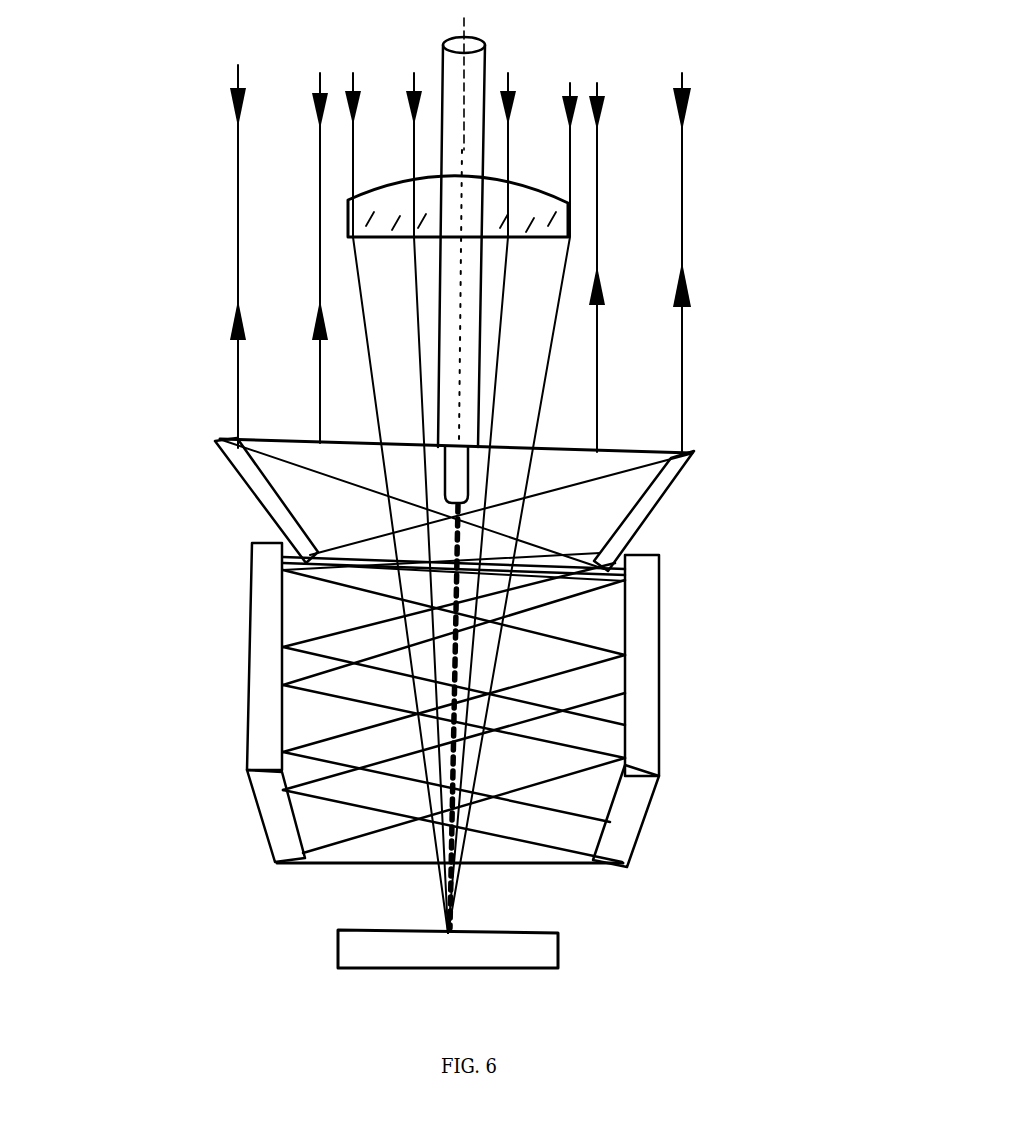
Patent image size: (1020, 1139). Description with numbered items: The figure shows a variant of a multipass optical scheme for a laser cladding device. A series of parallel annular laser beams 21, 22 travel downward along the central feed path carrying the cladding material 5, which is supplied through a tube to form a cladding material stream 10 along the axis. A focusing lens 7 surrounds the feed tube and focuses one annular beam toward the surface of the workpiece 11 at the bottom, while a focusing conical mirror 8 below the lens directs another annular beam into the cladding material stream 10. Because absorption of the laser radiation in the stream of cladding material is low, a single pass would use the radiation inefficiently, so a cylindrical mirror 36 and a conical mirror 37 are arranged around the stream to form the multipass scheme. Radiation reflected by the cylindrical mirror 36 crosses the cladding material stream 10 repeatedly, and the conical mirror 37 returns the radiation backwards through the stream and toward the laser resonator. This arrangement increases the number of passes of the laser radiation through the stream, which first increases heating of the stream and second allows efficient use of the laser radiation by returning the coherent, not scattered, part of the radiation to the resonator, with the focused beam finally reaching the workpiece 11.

The annular beam 21 is at (268, 147).
The annular beam 22 is at (542, 127).
The focusing lens 7 is at (348, 230).
The cladding material 5 is at (465, 279).
The focusing conical mirror 8 is at (666, 494).
The cladding material stream 10 is at (621, 835).
The cylindrical mirror 36 is at (262, 600).
The conical mirror 37 is at (277, 812).
The workpiece 11 is at (552, 950).